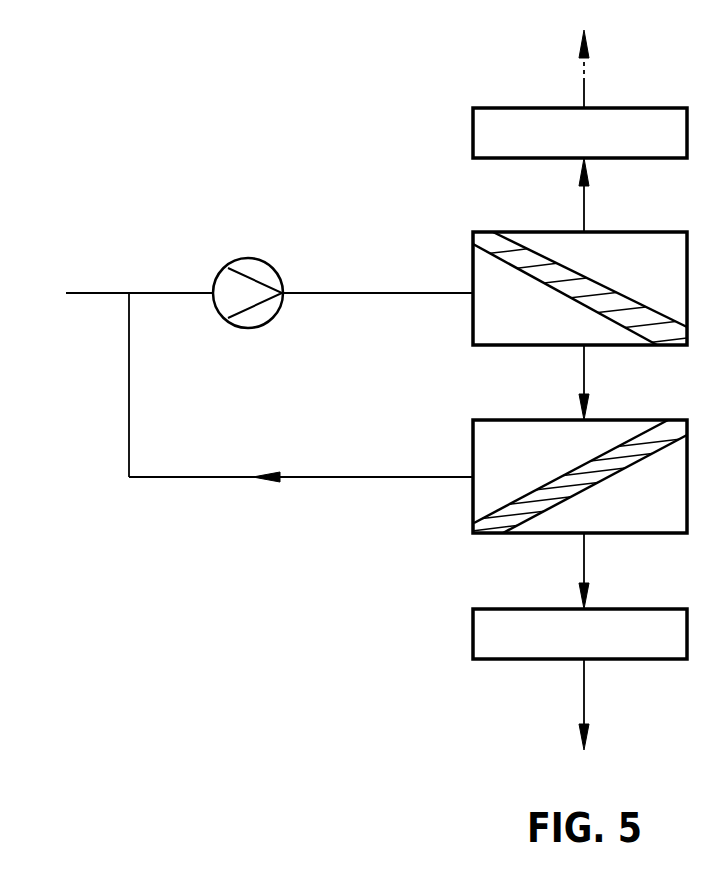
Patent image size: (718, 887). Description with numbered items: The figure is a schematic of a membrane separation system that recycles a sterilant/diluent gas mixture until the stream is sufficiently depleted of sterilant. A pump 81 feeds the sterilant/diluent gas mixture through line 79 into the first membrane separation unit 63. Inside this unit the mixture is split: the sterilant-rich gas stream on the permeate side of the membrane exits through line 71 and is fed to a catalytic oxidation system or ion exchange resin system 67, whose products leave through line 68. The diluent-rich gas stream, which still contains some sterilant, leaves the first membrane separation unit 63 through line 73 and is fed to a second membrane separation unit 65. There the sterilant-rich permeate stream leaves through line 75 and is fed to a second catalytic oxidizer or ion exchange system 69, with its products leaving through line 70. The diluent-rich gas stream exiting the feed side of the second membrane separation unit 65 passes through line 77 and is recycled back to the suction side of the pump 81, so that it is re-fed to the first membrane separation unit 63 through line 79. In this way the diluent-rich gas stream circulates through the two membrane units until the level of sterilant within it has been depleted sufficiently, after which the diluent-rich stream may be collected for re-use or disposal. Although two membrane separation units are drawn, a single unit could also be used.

The first membrane separation unit 63 is at (642, 232).
The second membrane separation unit 65 is at (642, 420).
The catalytic oxidation system or ion exchange resin system 67 is at (642, 108).
The line 68 is at (583, 81).
The second catalytic oxidizer or ion exchange system 69 is at (642, 609).
The line 70 is at (583, 692).
The line 71 is at (583, 204).
The line 73 is at (583, 377).
The line 75 is at (583, 565).
The line 77 is at (373, 477).
The line 79 is at (345, 293).
The pump 81 is at (270, 258).